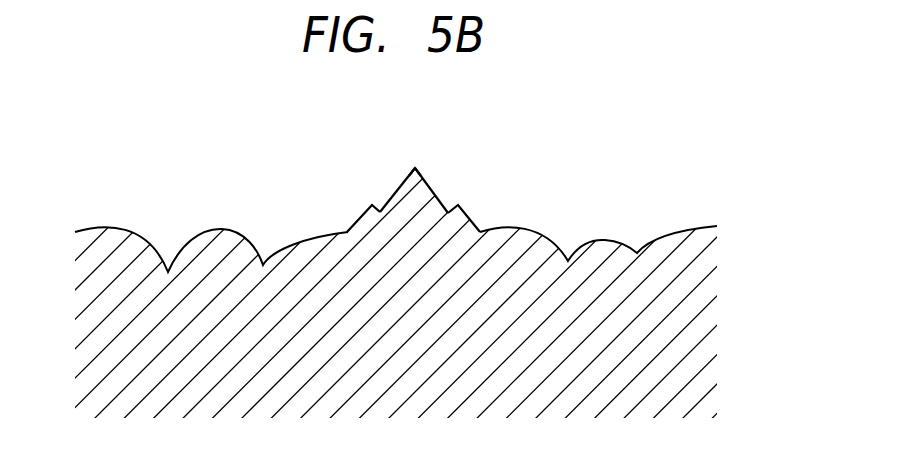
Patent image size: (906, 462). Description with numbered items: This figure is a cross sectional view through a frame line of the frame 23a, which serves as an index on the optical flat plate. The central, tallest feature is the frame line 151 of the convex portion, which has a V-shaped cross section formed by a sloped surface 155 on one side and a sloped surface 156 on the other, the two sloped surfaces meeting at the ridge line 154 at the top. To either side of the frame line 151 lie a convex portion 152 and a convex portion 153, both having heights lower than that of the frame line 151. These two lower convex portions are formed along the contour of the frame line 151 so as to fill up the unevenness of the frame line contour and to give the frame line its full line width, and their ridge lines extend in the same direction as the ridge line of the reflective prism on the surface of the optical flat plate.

The frame 23a is at (287, 122).
The frame line of convex portion 151 is at (437, 160).
The convex portion 152 is at (362, 212).
The convex portion 153 is at (471, 221).
The ridge line 154 is at (415, 168).
The sloped surface 155 is at (406, 178).
The sloped surface 156 is at (443, 208).